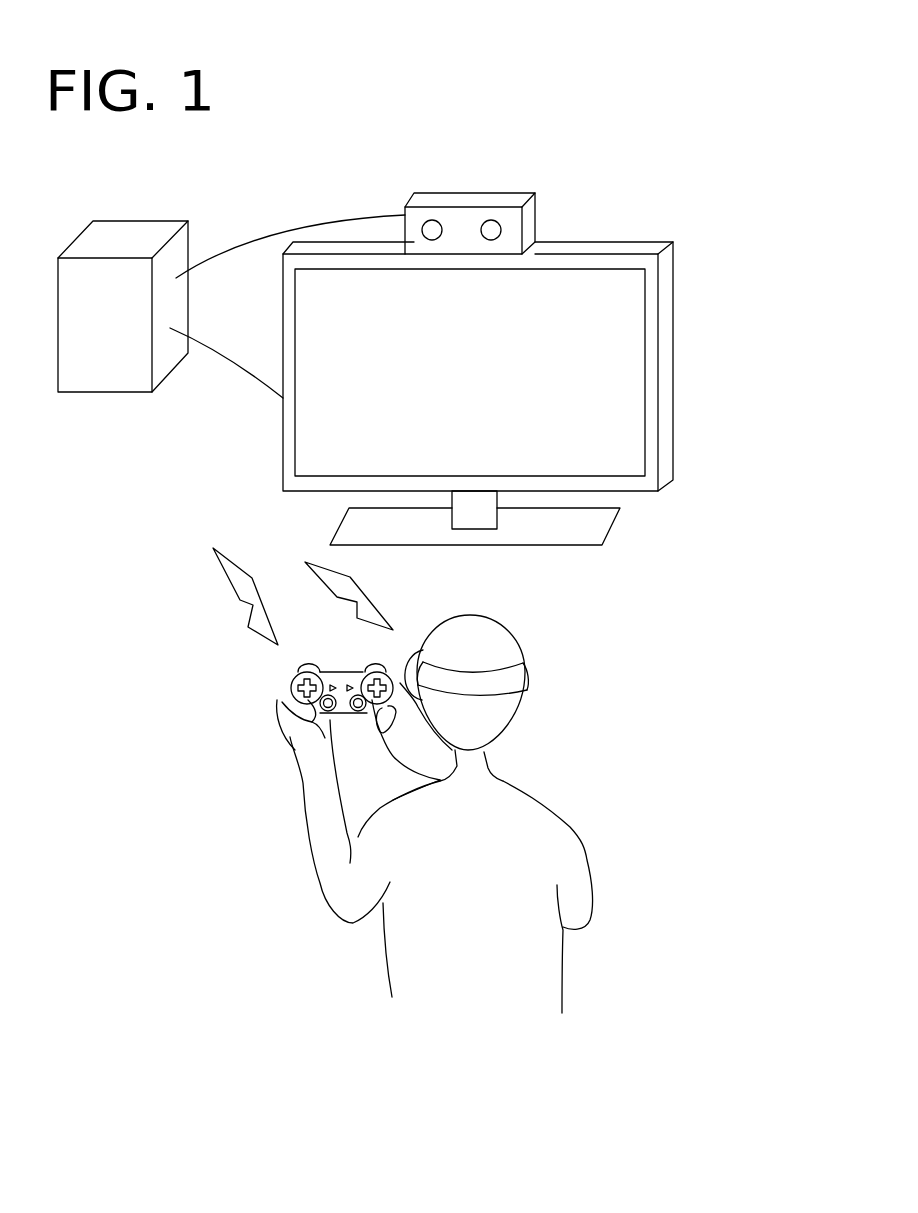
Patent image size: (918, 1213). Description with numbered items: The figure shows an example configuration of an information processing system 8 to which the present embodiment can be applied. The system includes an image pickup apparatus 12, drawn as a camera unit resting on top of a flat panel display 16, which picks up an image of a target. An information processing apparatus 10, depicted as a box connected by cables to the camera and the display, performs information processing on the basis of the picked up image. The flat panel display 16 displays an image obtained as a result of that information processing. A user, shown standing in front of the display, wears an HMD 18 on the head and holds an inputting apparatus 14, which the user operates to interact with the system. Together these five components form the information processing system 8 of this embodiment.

The information processing system 8 is at (794, 474).
The information processing apparatus 10 is at (147, 220).
The image pickup apparatus 12 is at (477, 192).
The inputting apparatus 14 is at (290, 688).
The flat panel display 16 is at (600, 242).
The HMD 18 is at (528, 667).